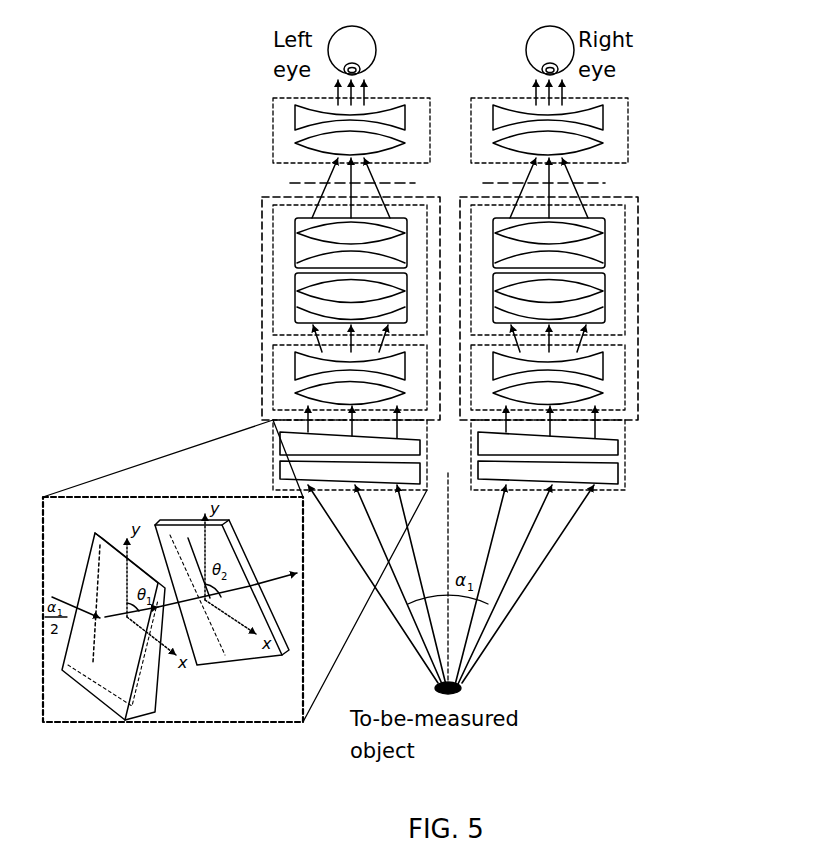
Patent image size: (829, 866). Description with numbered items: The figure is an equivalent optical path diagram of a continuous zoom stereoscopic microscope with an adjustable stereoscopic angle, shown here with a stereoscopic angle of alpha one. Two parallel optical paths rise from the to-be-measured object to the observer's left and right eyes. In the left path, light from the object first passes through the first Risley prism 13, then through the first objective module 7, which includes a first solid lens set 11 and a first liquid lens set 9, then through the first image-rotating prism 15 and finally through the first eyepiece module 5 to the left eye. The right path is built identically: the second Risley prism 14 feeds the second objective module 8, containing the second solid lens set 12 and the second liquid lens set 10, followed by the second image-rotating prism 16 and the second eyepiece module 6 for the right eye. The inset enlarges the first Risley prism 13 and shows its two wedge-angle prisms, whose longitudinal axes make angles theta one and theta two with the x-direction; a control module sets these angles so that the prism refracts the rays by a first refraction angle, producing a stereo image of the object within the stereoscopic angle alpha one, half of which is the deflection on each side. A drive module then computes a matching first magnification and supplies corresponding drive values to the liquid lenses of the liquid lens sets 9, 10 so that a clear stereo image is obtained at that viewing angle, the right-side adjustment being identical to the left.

The first eyepiece module 5 is at (287, 124).
The second eyepiece module 6 is at (617, 125).
The first objective module 7 is at (262, 296).
The second objective module 8 is at (638, 306).
The first liquid lens set 9 is at (287, 263).
The second liquid lens set 10 is at (607, 268).
The first solid lens set 11 is at (294, 385).
The second solid lens set 12 is at (603, 383).
The first Risley prism 13 is at (279, 463).
The second Risley prism 14 is at (627, 462).
The first image-rotating prism 15 is at (297, 183).
The second image-rotating prism 16 is at (600, 185).